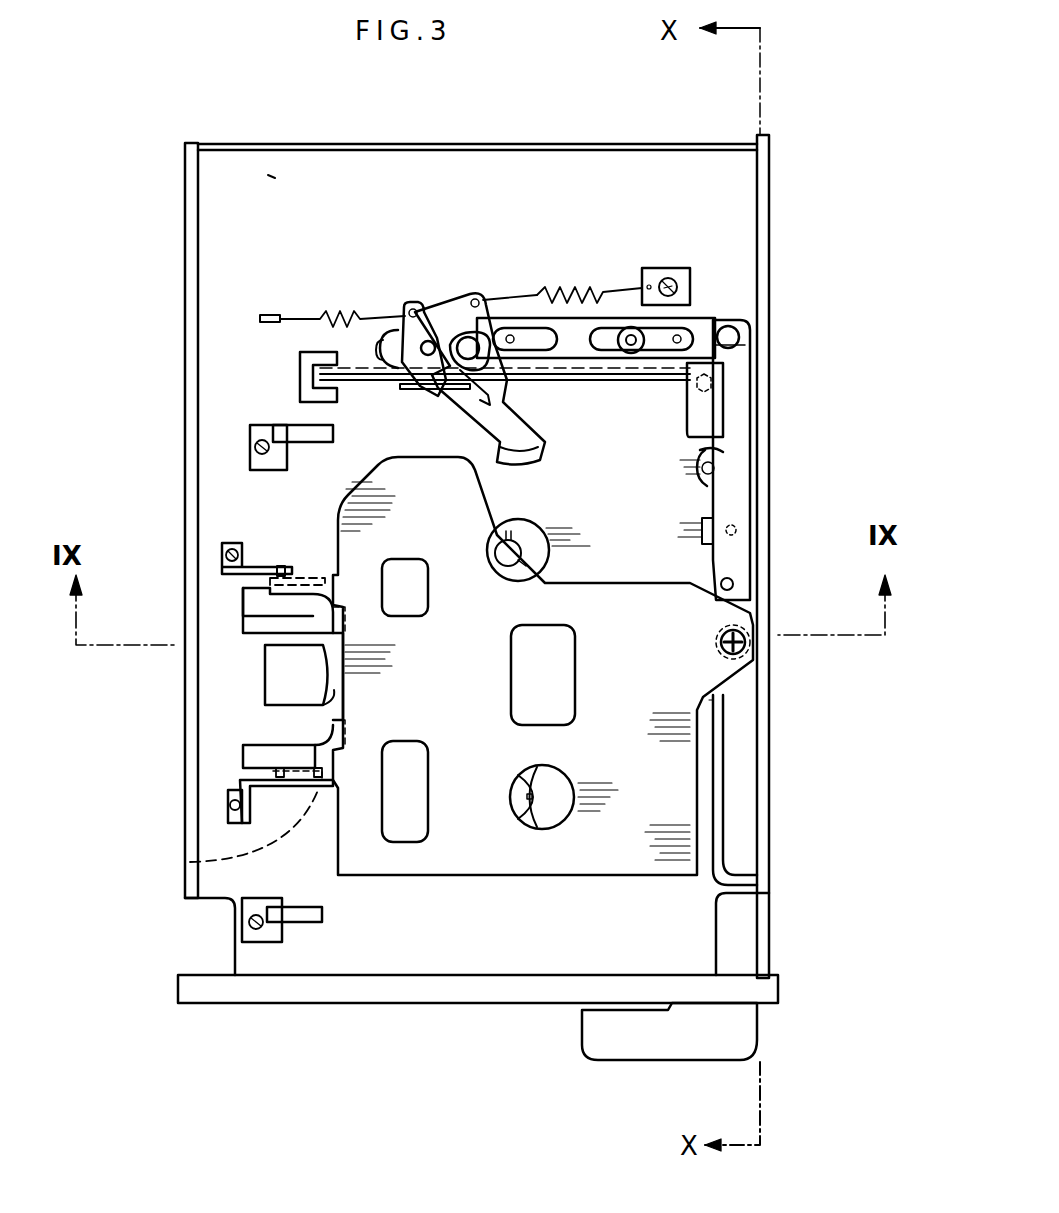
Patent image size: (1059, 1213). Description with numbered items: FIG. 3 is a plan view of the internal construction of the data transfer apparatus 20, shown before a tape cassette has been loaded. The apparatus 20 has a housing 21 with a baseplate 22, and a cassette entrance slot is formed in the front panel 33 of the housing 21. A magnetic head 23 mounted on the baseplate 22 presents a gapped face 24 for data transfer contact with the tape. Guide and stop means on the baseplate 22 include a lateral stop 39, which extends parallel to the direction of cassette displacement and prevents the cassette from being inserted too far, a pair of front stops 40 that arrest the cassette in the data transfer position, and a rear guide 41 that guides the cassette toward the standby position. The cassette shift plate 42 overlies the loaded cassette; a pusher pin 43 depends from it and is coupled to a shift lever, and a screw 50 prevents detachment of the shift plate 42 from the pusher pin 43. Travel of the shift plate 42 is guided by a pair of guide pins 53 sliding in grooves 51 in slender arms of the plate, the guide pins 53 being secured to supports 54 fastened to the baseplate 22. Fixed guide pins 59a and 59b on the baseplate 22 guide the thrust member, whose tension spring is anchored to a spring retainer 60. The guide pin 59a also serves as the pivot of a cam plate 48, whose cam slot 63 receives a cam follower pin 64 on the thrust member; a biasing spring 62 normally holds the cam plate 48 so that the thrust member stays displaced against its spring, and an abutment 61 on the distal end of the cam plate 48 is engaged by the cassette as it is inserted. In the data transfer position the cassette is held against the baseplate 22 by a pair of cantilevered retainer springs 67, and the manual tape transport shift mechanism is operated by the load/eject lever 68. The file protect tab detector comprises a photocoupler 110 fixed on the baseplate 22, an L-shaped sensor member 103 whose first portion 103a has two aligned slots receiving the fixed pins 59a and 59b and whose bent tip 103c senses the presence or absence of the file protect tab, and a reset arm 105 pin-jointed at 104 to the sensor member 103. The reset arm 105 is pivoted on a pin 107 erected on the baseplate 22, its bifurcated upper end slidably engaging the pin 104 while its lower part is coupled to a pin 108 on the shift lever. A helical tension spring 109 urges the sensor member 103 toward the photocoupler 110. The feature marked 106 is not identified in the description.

The data transfer apparatus 20 is at (636, 142).
The housing 21 is at (186, 740).
The baseplate 22 is at (284, 160).
The magnetic head 23 is at (270, 670).
The gapped face 24 is at (330, 708).
The front panel 33 is at (458, 1000).
The lateral stop 39 is at (400, 390).
The front stops 40 is at (250, 600).
The rear guide 41 is at (712, 745).
The cassette shift plate 42 is at (387, 878).
The pusher pin 43 is at (745, 656).
The cam plate 48 is at (432, 345).
The screw 50 is at (748, 650).
The grooves 51 is at (312, 576).
The guide pins 53 is at (279, 565).
The supports 54 is at (255, 560).
The fixed guide pin 59a is at (425, 338).
The fixed guide pin 59b is at (632, 356).
The spring retainer 60 is at (655, 268).
The abutment 61 is at (520, 460).
The biasing spring 62 is at (472, 300).
The cam slot 63 is at (468, 392).
The cam follower pin 64 is at (478, 350).
The cantilevered retainer springs 67 is at (287, 432).
The load/eject lever 68 is at (750, 1020).
The sensor member 103 is at (558, 315).
The first portion 103a is at (602, 332).
The tip 103c is at (722, 430).
The pin 104 is at (740, 337).
The reset arm 105 is at (740, 458).
The hole 106 is at (512, 336).
The pin 107 is at (740, 580).
The pin 108 is at (740, 528).
The helical tension spring 109 is at (332, 315).
The photocoupler 110 is at (300, 365).